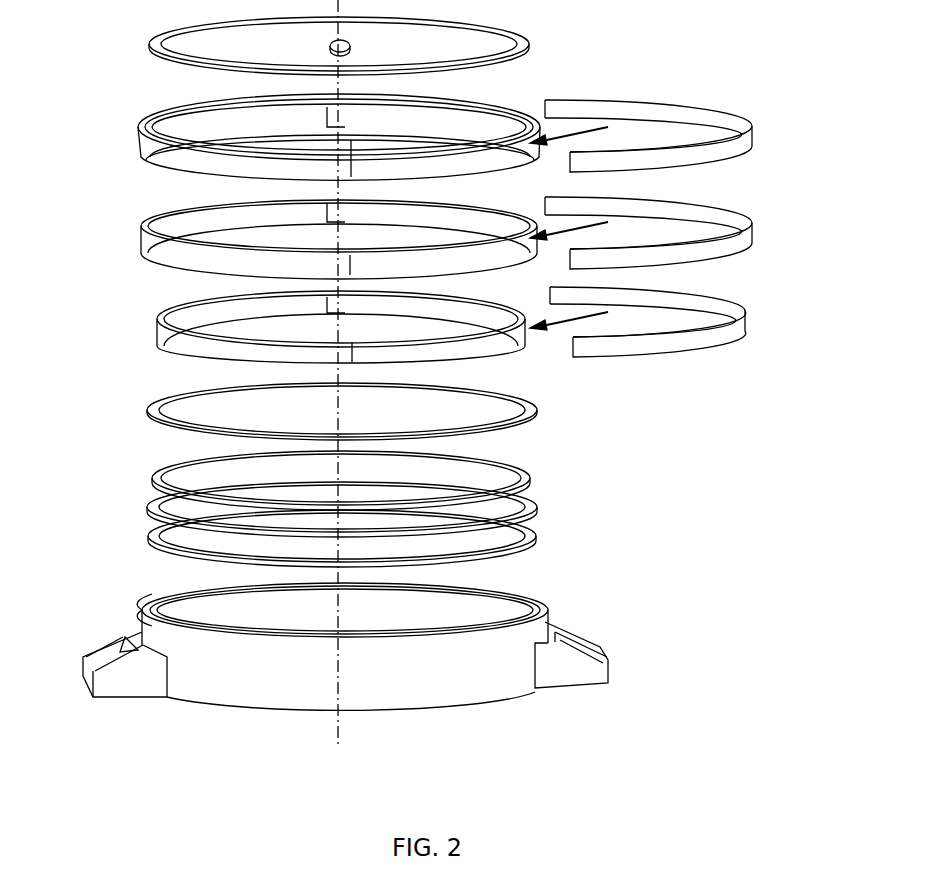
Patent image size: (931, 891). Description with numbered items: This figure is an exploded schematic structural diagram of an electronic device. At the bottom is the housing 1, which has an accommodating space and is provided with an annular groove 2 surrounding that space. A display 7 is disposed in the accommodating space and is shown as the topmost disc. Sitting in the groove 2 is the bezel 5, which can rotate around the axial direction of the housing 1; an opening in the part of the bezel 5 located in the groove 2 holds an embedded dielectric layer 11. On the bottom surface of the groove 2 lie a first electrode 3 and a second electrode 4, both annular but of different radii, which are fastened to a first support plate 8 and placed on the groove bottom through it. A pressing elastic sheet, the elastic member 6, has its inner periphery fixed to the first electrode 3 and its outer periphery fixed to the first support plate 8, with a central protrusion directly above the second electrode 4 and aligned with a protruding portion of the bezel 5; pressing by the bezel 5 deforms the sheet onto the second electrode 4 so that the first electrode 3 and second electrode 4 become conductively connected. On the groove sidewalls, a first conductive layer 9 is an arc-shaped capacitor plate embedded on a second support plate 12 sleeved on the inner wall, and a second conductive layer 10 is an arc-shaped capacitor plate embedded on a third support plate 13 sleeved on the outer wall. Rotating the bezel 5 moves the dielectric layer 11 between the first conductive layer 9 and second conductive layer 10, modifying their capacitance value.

The housing 1 is at (517, 592).
The groove 2 is at (142, 614).
The first electrode 3 is at (538, 510).
The second electrode 4 is at (523, 465).
The bezel 5 is at (445, 92).
The elastic member 6 is at (520, 415).
The display 7 is at (527, 43).
The first support plate 8 is at (540, 537).
The first conductive layer 9 is at (597, 193).
The second conductive layer 10 is at (577, 280).
The dielectric layer 11 is at (560, 93).
The second support plate 12 is at (455, 190).
The third support plate 13 is at (445, 288).